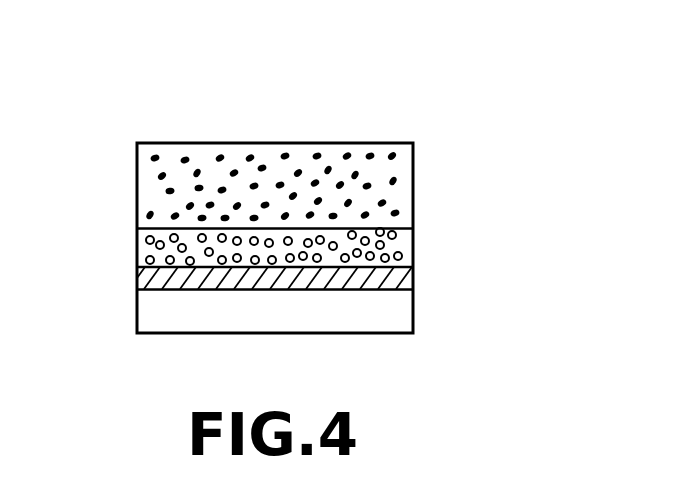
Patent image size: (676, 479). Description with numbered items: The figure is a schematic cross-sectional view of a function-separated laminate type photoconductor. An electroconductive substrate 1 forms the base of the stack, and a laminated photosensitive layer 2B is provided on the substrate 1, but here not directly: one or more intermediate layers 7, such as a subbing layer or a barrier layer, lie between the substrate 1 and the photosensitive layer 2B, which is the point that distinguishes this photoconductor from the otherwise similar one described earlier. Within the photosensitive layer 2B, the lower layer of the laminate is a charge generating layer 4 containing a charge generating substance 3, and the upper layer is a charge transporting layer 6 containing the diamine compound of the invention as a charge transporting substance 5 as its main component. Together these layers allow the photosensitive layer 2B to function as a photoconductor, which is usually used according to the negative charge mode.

The electroconductive substrate 1 is at (408, 305).
The laminated photosensitive layer 2B is at (490, 165).
The charge generating substance 3 is at (281, 249).
The charge generating layer 4 is at (404, 243).
The charge transporting substance 5 is at (281, 186).
The charge transporting layer 6 is at (397, 197).
The intermediate layer 7 is at (146, 279).